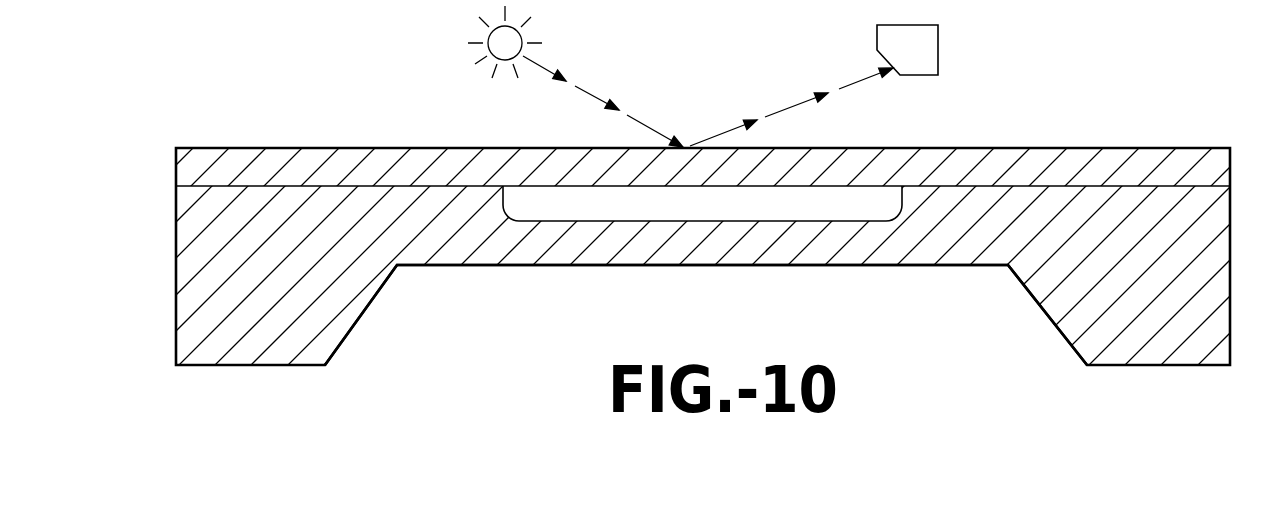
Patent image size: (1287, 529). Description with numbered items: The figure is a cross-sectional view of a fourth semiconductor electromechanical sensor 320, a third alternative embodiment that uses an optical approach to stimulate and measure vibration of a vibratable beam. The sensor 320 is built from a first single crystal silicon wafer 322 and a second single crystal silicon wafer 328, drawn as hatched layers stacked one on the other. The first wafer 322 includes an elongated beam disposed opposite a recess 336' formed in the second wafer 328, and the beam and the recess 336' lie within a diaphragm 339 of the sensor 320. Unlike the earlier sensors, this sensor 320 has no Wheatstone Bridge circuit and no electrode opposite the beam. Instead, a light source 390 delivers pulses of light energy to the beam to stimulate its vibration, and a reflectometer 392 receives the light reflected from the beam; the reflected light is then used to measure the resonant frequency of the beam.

The semiconductor electromechanical sensor 320 is at (643, 215).
The first single crystal silicon wafer 322 is at (385, 147).
The second single crystal silicon wafer 328 is at (933, 250).
The recess 336' is at (706, 219).
The diaphragm 339 is at (458, 297).
The light source 390 is at (468, 28).
The reflectometer 392 is at (938, 55).